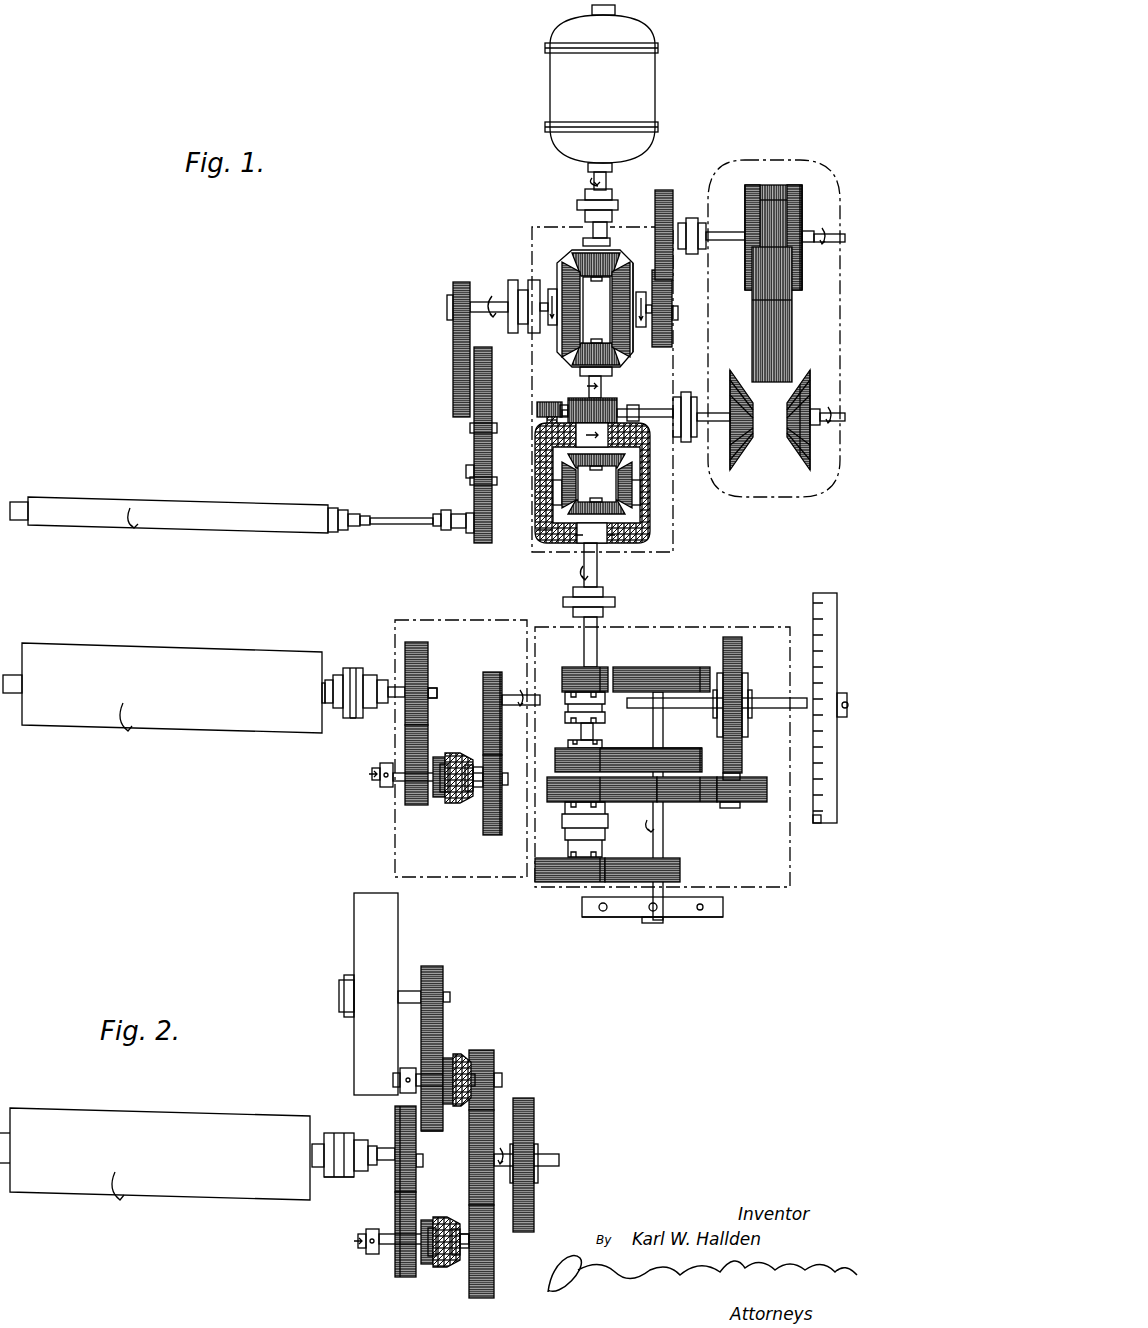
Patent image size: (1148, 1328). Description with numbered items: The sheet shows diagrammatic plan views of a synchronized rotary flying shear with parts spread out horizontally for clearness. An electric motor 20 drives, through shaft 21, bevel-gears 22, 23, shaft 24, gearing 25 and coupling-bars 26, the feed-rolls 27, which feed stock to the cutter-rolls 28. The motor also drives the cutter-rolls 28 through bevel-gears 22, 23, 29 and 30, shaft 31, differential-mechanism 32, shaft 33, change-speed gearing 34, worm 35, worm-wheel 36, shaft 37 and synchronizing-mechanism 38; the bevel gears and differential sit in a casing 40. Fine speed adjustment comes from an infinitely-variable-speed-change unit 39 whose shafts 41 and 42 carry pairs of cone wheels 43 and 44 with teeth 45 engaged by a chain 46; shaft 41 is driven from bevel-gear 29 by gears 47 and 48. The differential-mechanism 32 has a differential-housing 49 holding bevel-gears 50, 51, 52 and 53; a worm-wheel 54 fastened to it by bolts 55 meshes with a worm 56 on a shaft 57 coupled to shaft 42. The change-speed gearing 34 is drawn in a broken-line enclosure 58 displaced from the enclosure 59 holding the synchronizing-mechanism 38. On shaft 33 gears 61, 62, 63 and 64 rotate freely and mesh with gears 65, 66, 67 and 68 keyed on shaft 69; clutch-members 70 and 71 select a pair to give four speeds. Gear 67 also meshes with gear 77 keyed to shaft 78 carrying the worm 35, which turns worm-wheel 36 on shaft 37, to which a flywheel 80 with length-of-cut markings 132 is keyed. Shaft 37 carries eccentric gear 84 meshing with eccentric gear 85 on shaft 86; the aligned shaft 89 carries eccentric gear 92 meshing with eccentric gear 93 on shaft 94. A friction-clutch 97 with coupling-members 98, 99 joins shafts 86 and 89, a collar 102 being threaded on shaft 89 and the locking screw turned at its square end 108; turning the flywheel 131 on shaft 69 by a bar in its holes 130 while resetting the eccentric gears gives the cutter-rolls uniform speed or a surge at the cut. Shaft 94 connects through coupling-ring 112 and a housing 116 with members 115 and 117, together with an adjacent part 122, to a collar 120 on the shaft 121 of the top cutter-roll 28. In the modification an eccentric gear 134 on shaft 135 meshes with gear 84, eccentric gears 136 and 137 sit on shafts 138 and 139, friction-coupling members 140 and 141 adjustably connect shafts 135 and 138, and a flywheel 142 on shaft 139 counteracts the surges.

In FIG. 1, the electric motor 20 is at (551, 76).
In FIG. 1, the shaft 21 is at (593, 228).
In FIG. 1, the bevel-gear 22 is at (585, 244).
In FIG. 1, the bevel-gear 23 is at (560, 263).
In FIG. 1, the shaft 24 is at (492, 301).
In FIG. 1, the gearing 25 is at (453, 302).
In FIG. 1, the coupling-bars 26 is at (410, 518).
In FIG. 1, the feed-rolls 27 is at (232, 497).
In FIG. 1, the cutter-rolls 28 is at (235, 643).
In FIG. 2, the cutter-rolls 28 is at (172, 1116).
In FIG. 1, the bevel-gear 29 is at (634, 264).
In FIG. 1, the bevel-gear 30 is at (580, 371).
In FIG. 1, the shaft 31 is at (589, 388).
In FIG. 1, the differential-mechanism 32 is at (537, 445).
In FIG. 1, the shaft 33 is at (598, 576).
In FIG. 1, the change-speed gearing 34 is at (640, 667).
In FIG. 1, the worm 35 is at (750, 694).
In FIG. 1, the worm-wheel 36 is at (733, 637).
In FIG. 2, the worm-wheel 36 is at (535, 1132).
In FIG. 1, the shaft 37 is at (508, 705).
In FIG. 2, the shaft 37 is at (538, 1168).
In FIG. 1, the synchronizing-mechanism 38 is at (505, 672).
In FIG. 1, the infinitely-variable-speed-change unit 39 is at (866, 185).
In FIG. 1, the casing 40 is at (533, 228).
In FIG. 1, the shaft 41 is at (716, 232).
In FIG. 1, the shaft 42 is at (706, 412).
In FIG. 1, the cone wheels 43 is at (800, 182).
In FIG. 1, the cone wheels 44 is at (787, 462).
In FIG. 1, the teeth 45 is at (746, 270).
In FIG. 1, the chain 46 is at (792, 332).
In FIG. 1, the gear 47 is at (674, 307).
In FIG. 1, the gear 48 is at (668, 190).
In FIG. 1, the differential-housing 49 is at (537, 532).
In FIG. 1, the bevel-gear 50 is at (596, 484).
In FIG. 1, the bevel-gear 51 is at (641, 460).
In FIG. 1, the bevel-gear 52 is at (611, 505).
In FIG. 1, the bevel-gear 53 is at (553, 496).
In FIG. 1, the worm-wheel 54 is at (537, 404).
In FIG. 1, the bolts 55 is at (560, 406).
In FIG. 1, the worm 56 is at (605, 398).
In FIG. 1, the shaft 57 is at (680, 388).
In FIG. 1, the broken-line enclosure 58 is at (779, 627).
In FIG. 1, the enclosure 59 is at (412, 620).
In FIG. 1, the gear 61 is at (560, 669).
In FIG. 1, the gear 62 is at (557, 750).
In FIG. 1, the gear 63 is at (548, 799).
In FIG. 1, the gear 64 is at (544, 882).
In FIG. 1, the gear 65 is at (701, 667).
In FIG. 1, the gear 66 is at (695, 757).
In FIG. 1, the gear 67 is at (676, 803).
In FIG. 1, the gear 68 is at (680, 876).
In FIG. 1, the shaft 69 is at (664, 855).
In FIG. 1, the clutch-member 70 is at (606, 718).
In FIG. 1, the clutch-member 71 is at (609, 830).
In FIG. 1, the gear 77 is at (755, 803).
In FIG. 1, the shaft 78 is at (741, 777).
In FIG. 1, the flywheel 80 is at (836, 593).
In FIG. 1, the eccentric gear 84 is at (483, 680).
In FIG. 2, the eccentric gear 84 is at (469, 1178).
In FIG. 1, the eccentric gear 85 is at (488, 835).
In FIG. 2, the eccentric gear 85 is at (494, 1296).
In FIG. 1, the shaft 86 is at (476, 790).
In FIG. 2, the shaft 86 is at (490, 1250).
In FIG. 1, the shaft 89 is at (436, 805).
In FIG. 2, the shaft 89 is at (427, 1265).
In FIG. 1, the eccentric gear 92 is at (405, 800).
In FIG. 2, the eccentric gear 92 is at (400, 1278).
In FIG. 1, the eccentric gear 93 is at (428, 648).
In FIG. 2, the eccentric gear 93 is at (397, 1108).
In FIG. 1, the shaft 94 is at (438, 692).
In FIG. 2, the shaft 94 is at (420, 1168).
In FIG. 1, the friction-clutch 97 is at (446, 805).
In FIG. 2, the friction-clutch 97 is at (456, 1216).
In FIG. 1, the coupling-member 98 is at (468, 760).
In FIG. 2, the coupling-member 98 is at (457, 1266).
In FIG. 1, the coupling-member 99 is at (445, 758).
In FIG. 2, the coupling-member 99 is at (438, 1267).
In FIG. 1, the collar 102 is at (382, 788).
In FIG. 2, the collar 102 is at (370, 1255).
In FIG. 1, the square end 108 is at (371, 775).
In FIG. 2, the square end 108 is at (358, 1242).
In FIG. 1, the coupling-ring 112 is at (377, 680).
In FIG. 2, the coupling-ring 112 is at (372, 1165).
In FIG. 1, the right-hand housing member 115 is at (360, 668).
In FIG. 2, the right-hand housing member 115 is at (352, 1178).
In FIG. 1, the housing 116 is at (352, 718).
In FIG. 2, the housing 116 is at (339, 1178).
In FIG. 1, the left-hand housing member 117 is at (338, 675).
In FIG. 2, the left-hand housing member 117 is at (328, 1178).
In FIG. 1, the collar 120 is at (326, 681).
In FIG. 2, the collar 120 is at (336, 1133).
In FIG. 1, the shaft 121 is at (330, 705).
In FIG. 2, the shaft 121 is at (316, 1144).
In FIG. 1, the coupling member 122 is at (383, 703).
In FIG. 2, the coupling member 122 is at (360, 1140).
In FIG. 1, the holes 130 is at (605, 912).
In FIG. 1, the flywheel 131 is at (697, 915).
In FIG. 1, the length of cut markings 132 is at (817, 823).
In FIG. 2, the eccentric gear 134 is at (494, 1058).
In FIG. 2, the shaft 135 is at (502, 1080).
In FIG. 2, the eccentric gear 136 is at (430, 1131).
In FIG. 2, the eccentric gear 137 is at (443, 975).
In FIG. 2, the shaft 138 is at (410, 1068).
In FIG. 2, the shaft 139 is at (450, 997).
In FIG. 2, the friction-coupling member 140 is at (468, 1060).
In FIG. 2, the friction-coupling member 141 is at (450, 1058).
In FIG. 2, the flywheel 142 is at (354, 1040).